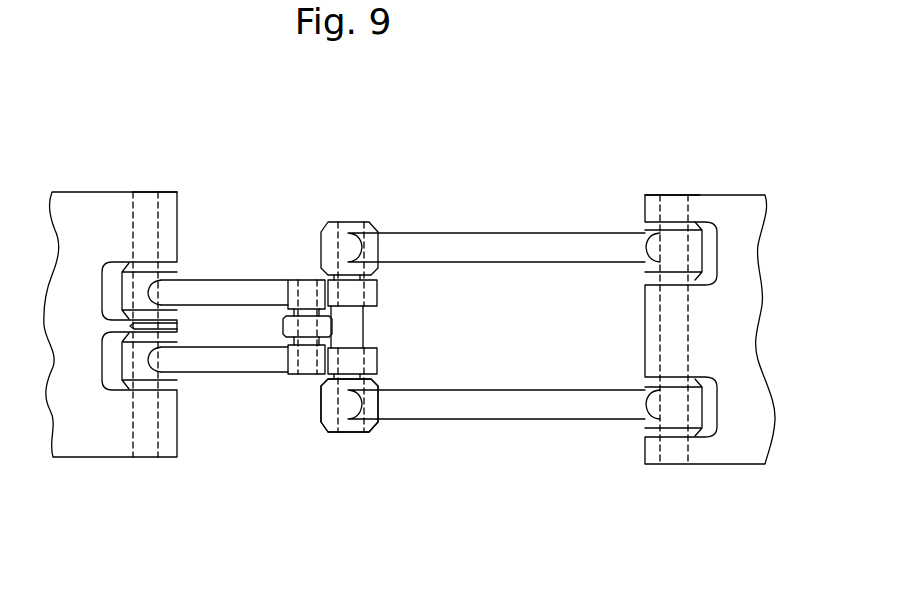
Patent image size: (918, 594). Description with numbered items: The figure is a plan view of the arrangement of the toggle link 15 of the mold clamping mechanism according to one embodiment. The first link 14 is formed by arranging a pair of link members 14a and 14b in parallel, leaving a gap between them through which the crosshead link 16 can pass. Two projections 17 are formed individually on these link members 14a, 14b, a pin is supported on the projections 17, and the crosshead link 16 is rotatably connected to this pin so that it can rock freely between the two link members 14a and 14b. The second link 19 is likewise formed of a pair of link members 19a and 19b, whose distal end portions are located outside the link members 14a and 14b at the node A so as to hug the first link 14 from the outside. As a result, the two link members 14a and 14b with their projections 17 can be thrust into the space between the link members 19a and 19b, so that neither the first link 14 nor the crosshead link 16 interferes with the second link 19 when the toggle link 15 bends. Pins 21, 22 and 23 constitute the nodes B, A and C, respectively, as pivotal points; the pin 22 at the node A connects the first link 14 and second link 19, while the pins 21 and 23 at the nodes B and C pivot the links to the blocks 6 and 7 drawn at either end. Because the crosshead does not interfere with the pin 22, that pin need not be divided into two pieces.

The first member (frame block) 6 is at (105, 202).
The second member (frame block) 7 is at (733, 450).
The first link 14 is at (230, 290).
The link member 14a is at (376, 289).
The link member 14b is at (376, 362).
The toggle link 15 is at (504, 335).
The crosshead link 16 is at (282, 326).
The projection 17 is at (308, 290).
The second link 19 is at (504, 316).
The link member 19a is at (493, 245).
The link member 19b is at (490, 412).
The pin 21 is at (145, 440).
The pin 22 is at (366, 324).
The pin 23 is at (670, 455).
The node A is at (357, 438).
The node B is at (168, 186).
The node C is at (667, 187).